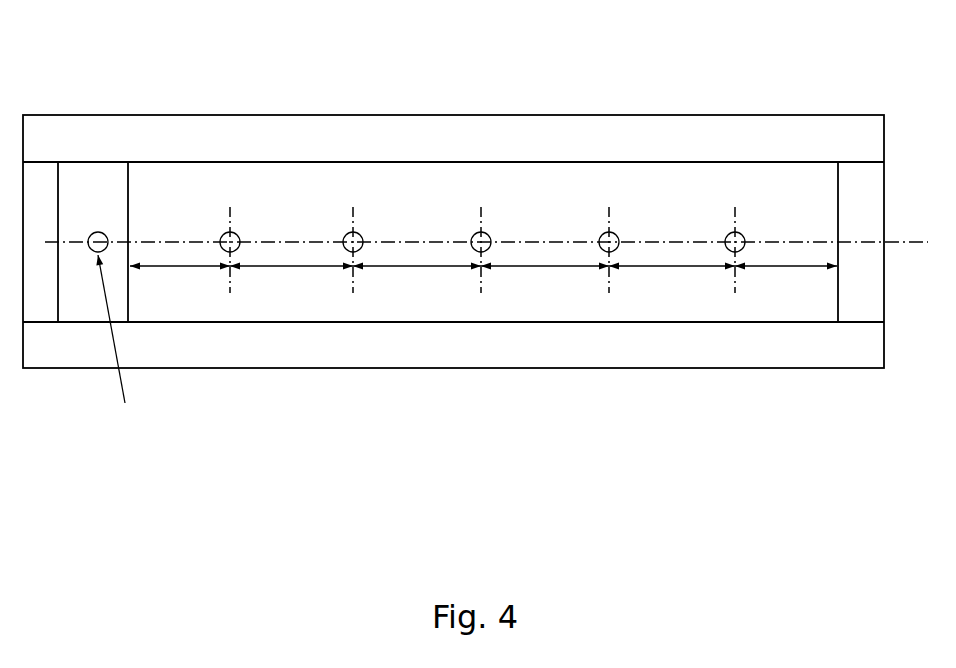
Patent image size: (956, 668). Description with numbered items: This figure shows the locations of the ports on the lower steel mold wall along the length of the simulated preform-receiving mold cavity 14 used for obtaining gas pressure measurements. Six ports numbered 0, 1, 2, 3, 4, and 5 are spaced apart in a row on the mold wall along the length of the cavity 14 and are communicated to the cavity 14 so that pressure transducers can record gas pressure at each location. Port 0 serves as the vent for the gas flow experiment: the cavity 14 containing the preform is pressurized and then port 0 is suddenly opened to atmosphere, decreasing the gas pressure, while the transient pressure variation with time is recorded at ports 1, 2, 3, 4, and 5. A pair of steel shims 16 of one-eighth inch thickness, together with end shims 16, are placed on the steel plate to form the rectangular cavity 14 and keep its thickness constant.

The simulated preform-receiving mold cavity 14 is at (712, 303).
The steel shims 16 is at (37, 195).
The port 0 is at (93, 213).
The port 1 is at (234, 233).
The port 2 is at (357, 233).
The port 3 is at (490, 233).
The port 4 is at (611, 233).
The port 5 is at (738, 233).